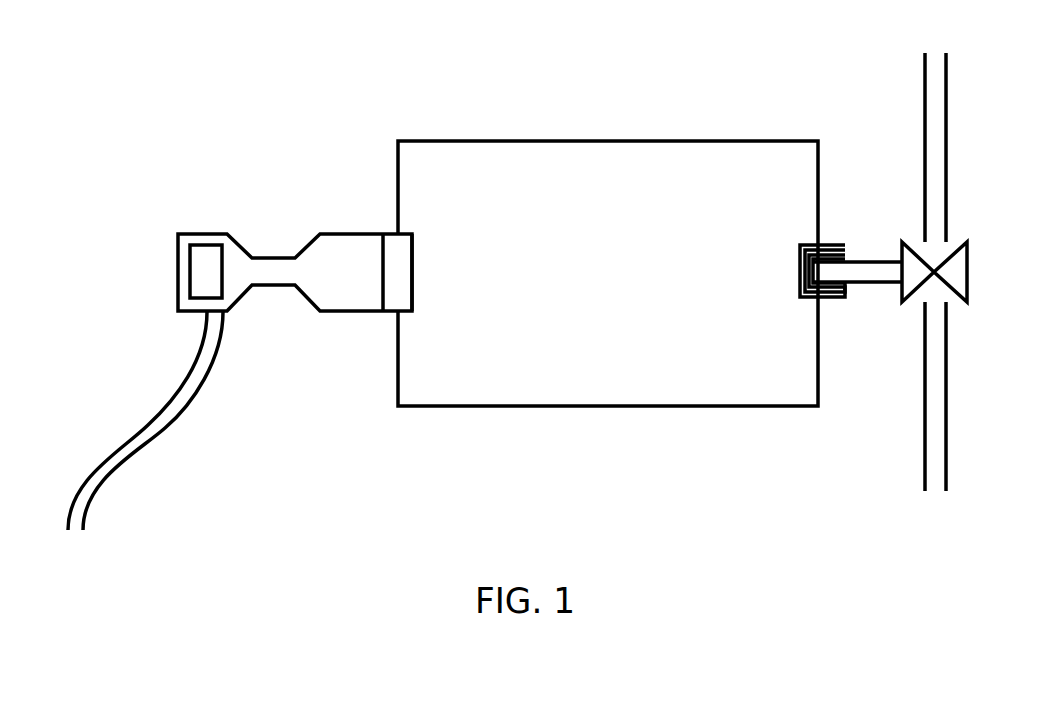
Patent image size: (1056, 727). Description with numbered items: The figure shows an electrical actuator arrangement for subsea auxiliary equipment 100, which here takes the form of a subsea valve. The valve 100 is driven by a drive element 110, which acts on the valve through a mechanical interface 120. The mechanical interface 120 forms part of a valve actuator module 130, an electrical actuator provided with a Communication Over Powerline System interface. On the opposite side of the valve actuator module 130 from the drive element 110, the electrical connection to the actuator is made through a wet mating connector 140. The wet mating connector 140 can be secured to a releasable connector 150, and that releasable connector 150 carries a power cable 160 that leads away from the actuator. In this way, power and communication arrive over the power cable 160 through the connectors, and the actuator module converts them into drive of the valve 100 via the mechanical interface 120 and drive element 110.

The subsea auxiliary equipment 100 is at (975, 205).
The drive element 110 is at (880, 268).
The mechanical interface 120 is at (830, 245).
The valve actuator module 130 is at (635, 140).
The wet mating connector 140 is at (392, 306).
The releasable connector 150 is at (348, 250).
The power cable 160 is at (128, 452).